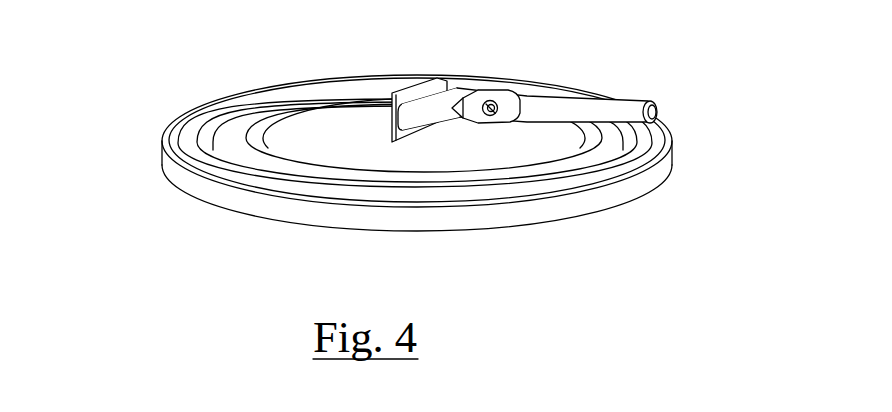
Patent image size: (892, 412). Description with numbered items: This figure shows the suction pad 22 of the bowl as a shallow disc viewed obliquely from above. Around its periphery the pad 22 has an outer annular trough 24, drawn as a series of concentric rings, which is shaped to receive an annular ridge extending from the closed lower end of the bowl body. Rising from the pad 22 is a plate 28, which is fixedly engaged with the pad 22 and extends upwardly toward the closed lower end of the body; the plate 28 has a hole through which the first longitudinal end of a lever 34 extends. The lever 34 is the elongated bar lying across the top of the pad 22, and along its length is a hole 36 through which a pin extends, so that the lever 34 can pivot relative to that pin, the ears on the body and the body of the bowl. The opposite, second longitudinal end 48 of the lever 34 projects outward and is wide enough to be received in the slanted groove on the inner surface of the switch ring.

The pad 22 is at (586, 208).
The outer annular trough 24 is at (190, 130).
The plate 28 is at (437, 91).
The lever 34 is at (545, 112).
The hole 36 is at (486, 114).
The second longitudinal end 48 is at (647, 100).